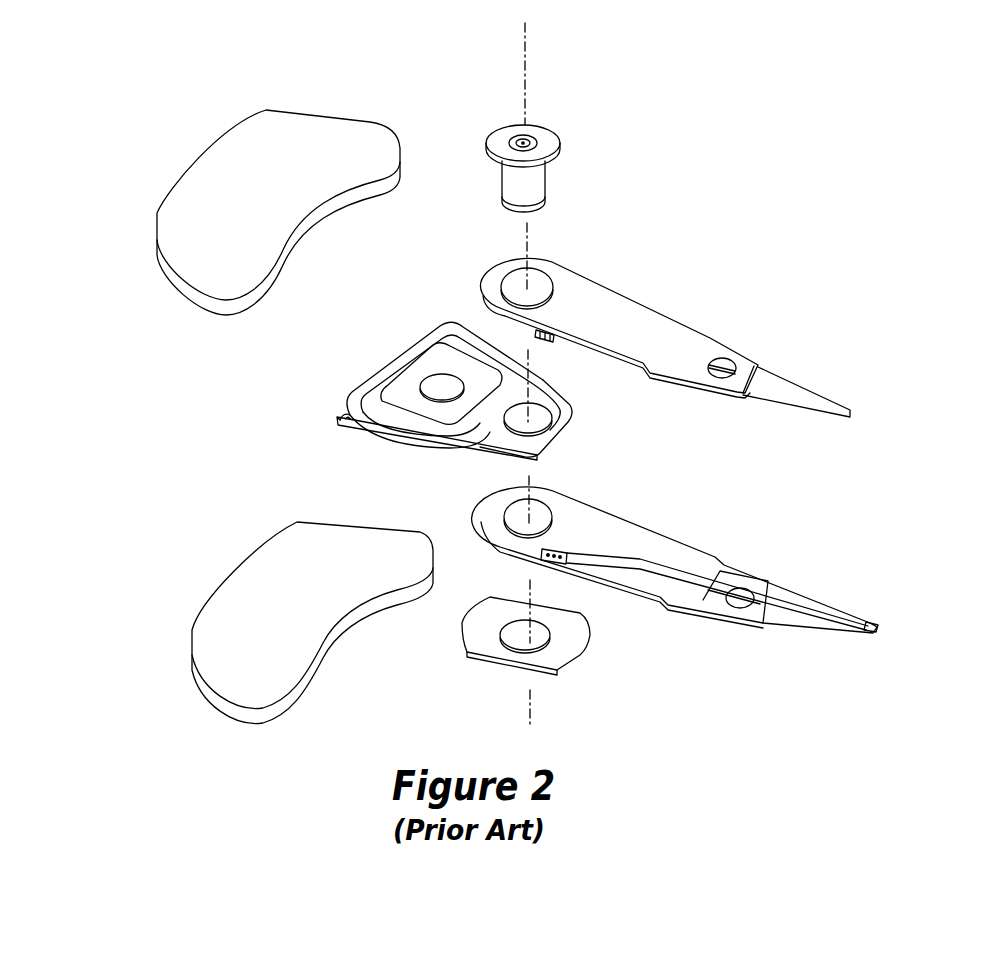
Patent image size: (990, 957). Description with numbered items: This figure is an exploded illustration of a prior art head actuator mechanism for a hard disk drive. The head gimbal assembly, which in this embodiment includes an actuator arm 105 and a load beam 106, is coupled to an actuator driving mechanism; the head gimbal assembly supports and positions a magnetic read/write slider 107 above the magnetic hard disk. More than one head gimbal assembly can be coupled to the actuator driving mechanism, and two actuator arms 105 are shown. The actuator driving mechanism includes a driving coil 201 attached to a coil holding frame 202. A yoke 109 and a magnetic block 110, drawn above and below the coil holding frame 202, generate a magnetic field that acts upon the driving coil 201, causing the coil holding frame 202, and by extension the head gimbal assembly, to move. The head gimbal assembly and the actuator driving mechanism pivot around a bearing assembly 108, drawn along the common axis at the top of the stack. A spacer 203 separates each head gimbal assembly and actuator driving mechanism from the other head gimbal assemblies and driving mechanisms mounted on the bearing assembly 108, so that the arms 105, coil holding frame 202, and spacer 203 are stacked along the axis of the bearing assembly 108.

The actuator arm 105 is at (635, 328).
The load beam 106 is at (777, 392).
The magnetic read/write slider 107 is at (873, 618).
The bearing assembly 108 is at (500, 145).
The yoke 109 is at (258, 141).
The magnetic block 110 is at (250, 595).
The driving coil 201 is at (373, 415).
The coil holding frame 202 is at (398, 354).
The spacer 203 is at (574, 638).